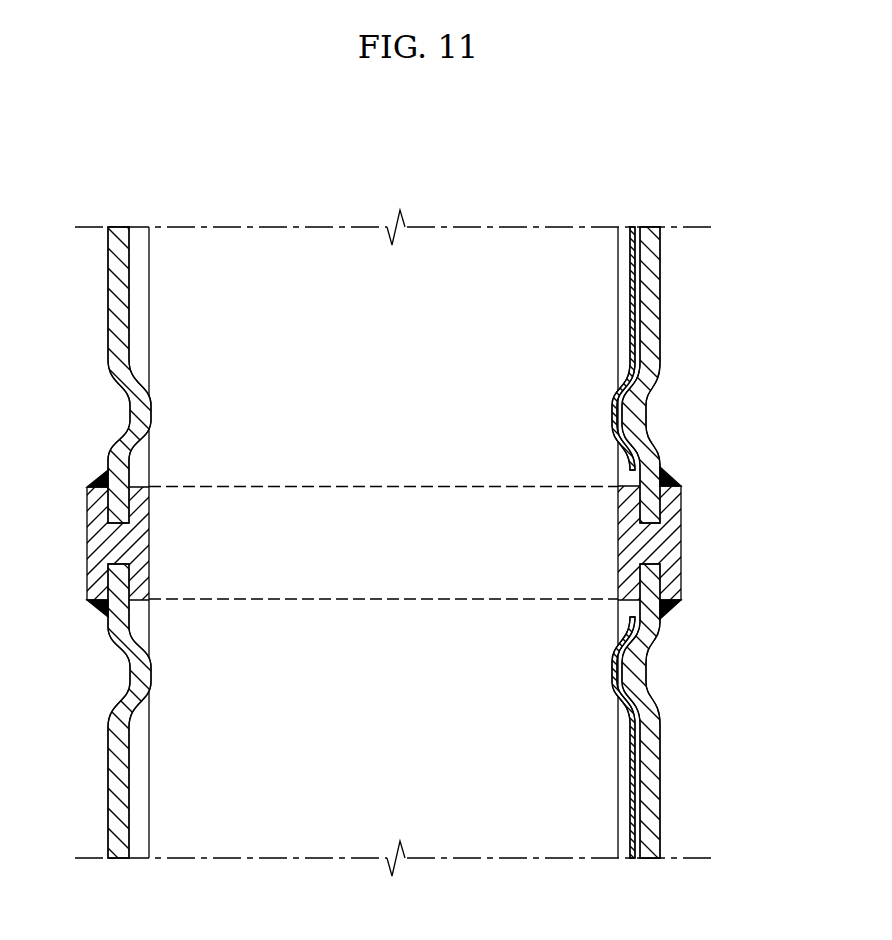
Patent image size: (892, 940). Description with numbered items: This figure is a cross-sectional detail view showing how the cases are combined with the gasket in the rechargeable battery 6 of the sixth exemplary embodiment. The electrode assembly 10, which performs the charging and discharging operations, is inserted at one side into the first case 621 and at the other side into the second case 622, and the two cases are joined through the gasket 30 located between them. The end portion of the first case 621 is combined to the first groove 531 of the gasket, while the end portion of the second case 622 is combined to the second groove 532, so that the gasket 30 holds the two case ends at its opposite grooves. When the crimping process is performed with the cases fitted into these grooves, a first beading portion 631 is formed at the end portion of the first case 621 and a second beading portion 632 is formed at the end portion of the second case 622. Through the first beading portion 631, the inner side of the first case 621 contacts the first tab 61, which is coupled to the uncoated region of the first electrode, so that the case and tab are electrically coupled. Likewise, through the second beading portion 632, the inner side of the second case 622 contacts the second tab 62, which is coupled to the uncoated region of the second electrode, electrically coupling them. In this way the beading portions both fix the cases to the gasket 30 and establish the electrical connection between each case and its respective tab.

The rechargeable battery 6 is at (421, 171).
The electrode assembly 10 is at (388, 801).
The gasket 30 is at (682, 527).
The second tab 62 is at (645, 318).
The second case 622 is at (661, 283).
The second beading portion 632 is at (629, 410).
The first tab 61 is at (638, 783).
The first case 621 is at (661, 735).
The first beading portion 631 is at (630, 673).
The second groove 532 is at (655, 505).
The first groove 531 is at (650, 580).